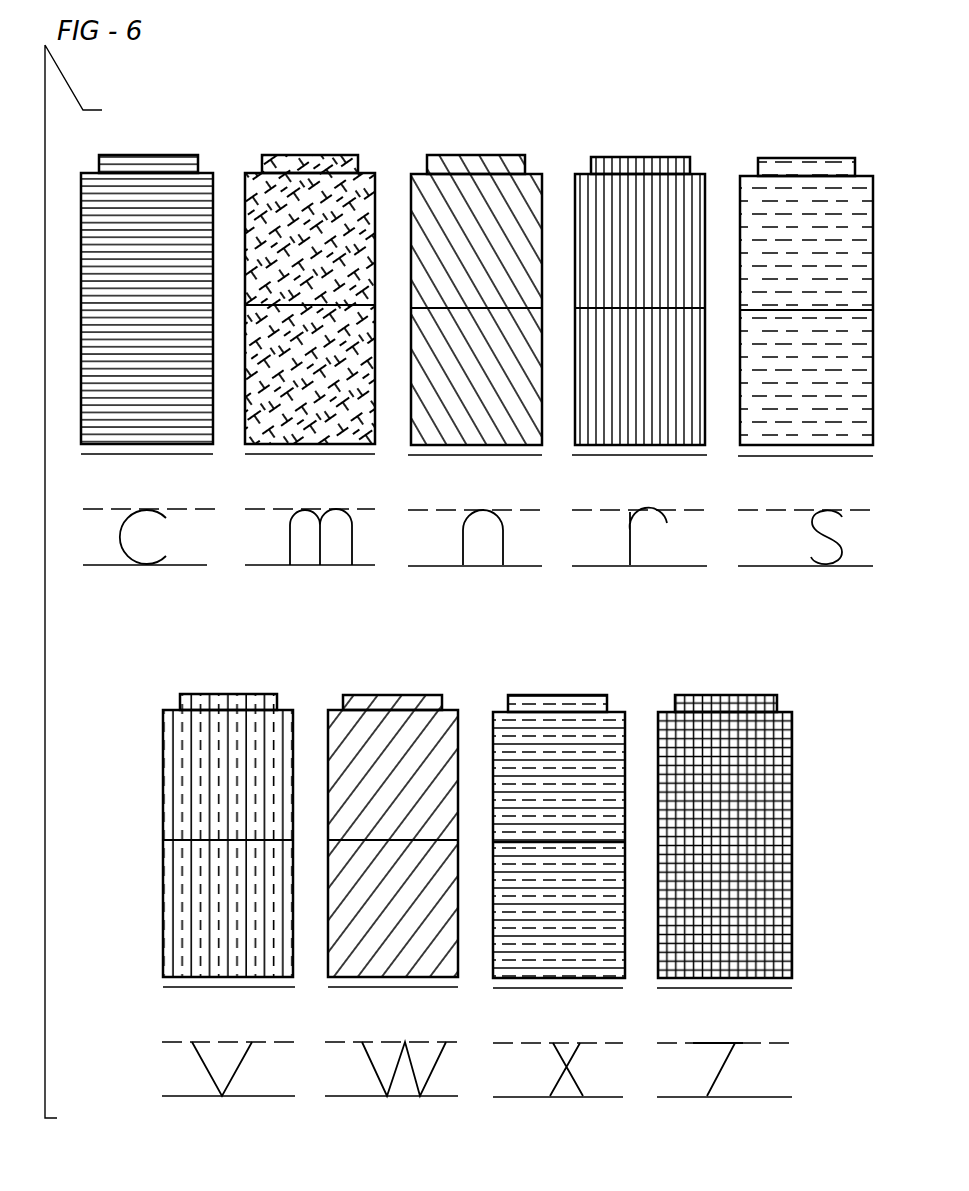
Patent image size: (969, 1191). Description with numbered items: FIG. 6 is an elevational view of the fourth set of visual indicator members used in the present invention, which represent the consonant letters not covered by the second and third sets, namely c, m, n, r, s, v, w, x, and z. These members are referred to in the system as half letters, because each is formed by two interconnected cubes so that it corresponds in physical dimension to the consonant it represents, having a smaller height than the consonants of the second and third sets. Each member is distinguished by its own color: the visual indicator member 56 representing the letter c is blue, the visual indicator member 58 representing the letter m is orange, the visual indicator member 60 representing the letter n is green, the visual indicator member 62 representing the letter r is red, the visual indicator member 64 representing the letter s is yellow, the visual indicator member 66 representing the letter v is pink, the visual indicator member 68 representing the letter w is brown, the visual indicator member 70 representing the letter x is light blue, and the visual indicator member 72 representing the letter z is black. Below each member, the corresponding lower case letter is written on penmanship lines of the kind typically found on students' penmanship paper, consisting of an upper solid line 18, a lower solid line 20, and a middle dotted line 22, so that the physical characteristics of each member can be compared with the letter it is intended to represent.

The visual indicator member 56 is at (180, 152).
The visual indicator member 58 is at (345, 155).
The visual indicator member 60 is at (510, 155).
The visual indicator member 62 is at (670, 157).
The visual indicator member 64 is at (803, 158).
The visual indicator member 66 is at (228, 692).
The visual indicator member 68 is at (410, 694).
The visual indicator member 70 is at (590, 694).
The visual indicator member 72 is at (780, 694).
The upper solid line 18 is at (113, 454).
The lower solid line 20 is at (178, 565).
The middle dotted line 22 is at (97, 509).